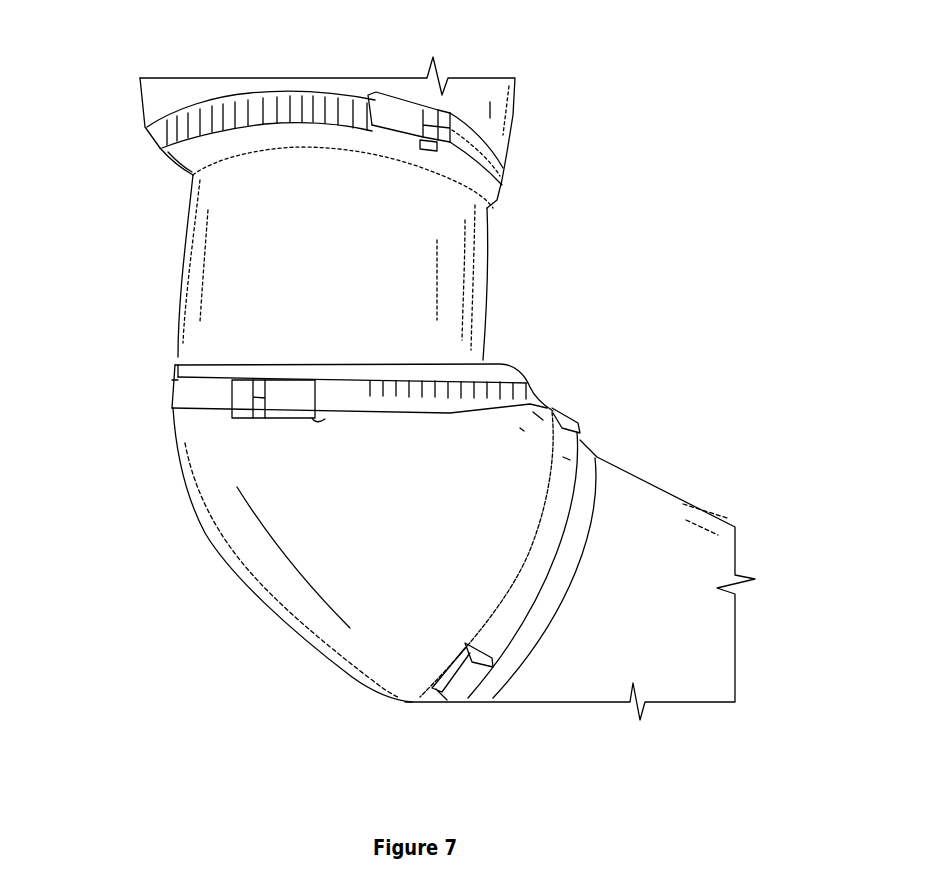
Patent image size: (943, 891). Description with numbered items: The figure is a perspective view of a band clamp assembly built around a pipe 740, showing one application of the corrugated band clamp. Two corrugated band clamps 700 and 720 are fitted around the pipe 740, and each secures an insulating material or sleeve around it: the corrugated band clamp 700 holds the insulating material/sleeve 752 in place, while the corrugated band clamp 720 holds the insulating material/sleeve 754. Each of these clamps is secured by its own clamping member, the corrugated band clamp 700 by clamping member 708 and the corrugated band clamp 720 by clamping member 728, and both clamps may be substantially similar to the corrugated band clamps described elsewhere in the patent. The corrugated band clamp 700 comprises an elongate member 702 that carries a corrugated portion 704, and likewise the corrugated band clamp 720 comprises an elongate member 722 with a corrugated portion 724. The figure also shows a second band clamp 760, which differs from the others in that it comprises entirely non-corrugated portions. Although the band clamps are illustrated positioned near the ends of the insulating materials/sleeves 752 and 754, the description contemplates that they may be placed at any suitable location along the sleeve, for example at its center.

The corrugated band clamp 700 is at (490, 160).
The elongate member 702 is at (150, 133).
The corrugated portion 704 is at (338, 128).
The clamping member 708 is at (400, 115).
The corrugated band clamp 720 is at (528, 385).
The elongate member 722 is at (188, 390).
The corrugated portion 724 is at (417, 388).
The clamping member 728 is at (280, 400).
The pipe 740 is at (423, 287).
The insulating material/sleeve 752 is at (485, 118).
The insulating material/sleeve 754 is at (330, 555).
The second band clamp 760 is at (578, 423).